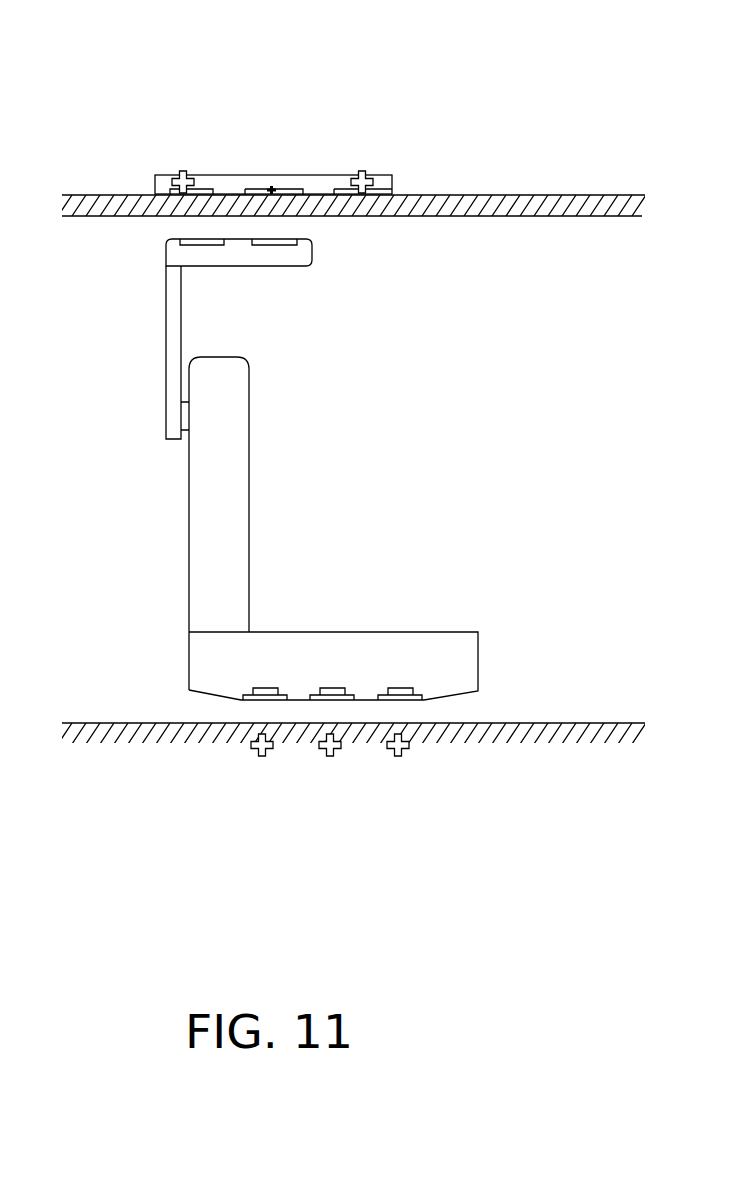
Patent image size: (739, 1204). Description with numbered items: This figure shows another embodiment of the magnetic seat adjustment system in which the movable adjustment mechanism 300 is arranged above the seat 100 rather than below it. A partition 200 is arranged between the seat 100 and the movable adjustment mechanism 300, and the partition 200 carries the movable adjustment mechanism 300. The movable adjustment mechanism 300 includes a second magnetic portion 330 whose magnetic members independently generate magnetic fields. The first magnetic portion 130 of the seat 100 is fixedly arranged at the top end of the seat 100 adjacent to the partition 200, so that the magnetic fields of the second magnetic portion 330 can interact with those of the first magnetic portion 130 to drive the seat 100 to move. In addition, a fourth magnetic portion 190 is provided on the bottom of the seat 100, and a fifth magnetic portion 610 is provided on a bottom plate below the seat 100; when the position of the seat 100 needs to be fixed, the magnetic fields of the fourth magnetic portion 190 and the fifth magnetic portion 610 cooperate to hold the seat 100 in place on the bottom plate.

The seat 100 is at (215, 495).
The first magnetic portion 130 is at (232, 250).
The fourth magnetic portion 190 is at (238, 681).
The partition 200 is at (413, 208).
The movable adjustment mechanism 300 is at (344, 153).
The second magnetic portion 330 is at (161, 178).
The fifth magnetic portion 610 is at (243, 765).